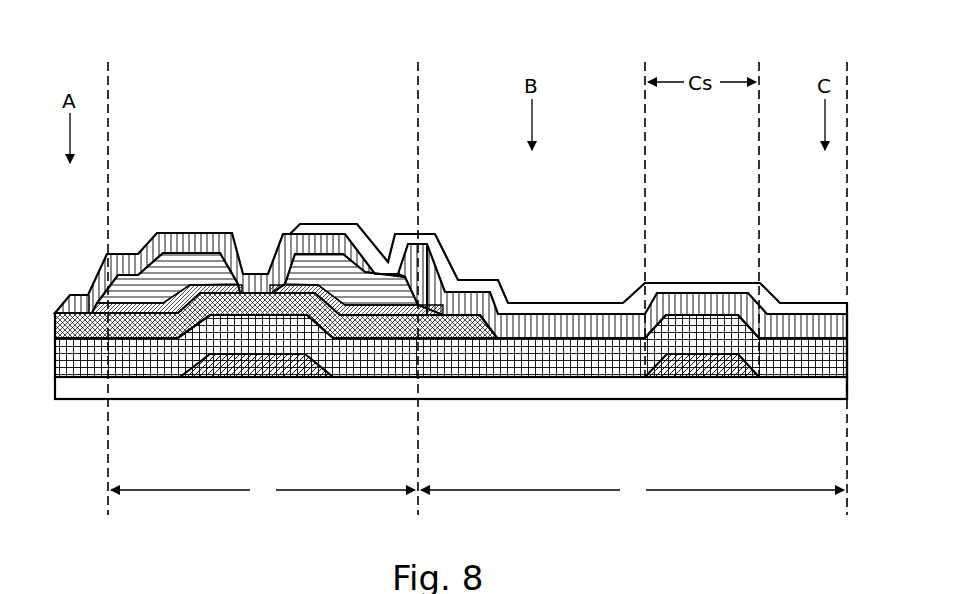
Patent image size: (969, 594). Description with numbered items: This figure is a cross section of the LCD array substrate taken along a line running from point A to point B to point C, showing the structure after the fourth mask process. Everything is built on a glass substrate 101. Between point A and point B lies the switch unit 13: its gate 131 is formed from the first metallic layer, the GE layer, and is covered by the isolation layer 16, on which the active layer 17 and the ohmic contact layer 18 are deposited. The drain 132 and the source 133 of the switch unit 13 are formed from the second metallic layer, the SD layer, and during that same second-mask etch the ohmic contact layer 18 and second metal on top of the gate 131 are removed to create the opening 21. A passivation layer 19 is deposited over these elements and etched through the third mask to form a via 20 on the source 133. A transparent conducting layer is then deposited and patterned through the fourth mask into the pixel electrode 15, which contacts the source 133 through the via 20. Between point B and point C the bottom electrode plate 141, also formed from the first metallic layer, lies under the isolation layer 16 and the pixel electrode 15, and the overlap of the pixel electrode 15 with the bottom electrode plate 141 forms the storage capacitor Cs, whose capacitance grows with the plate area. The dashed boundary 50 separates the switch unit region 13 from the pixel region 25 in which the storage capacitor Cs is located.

The glass substrate 101 is at (707, 388).
The gate 131 is at (245, 370).
The bottom electrode plate 141 is at (667, 378).
The isolation layer 16 is at (727, 347).
The active layer 17 is at (435, 327).
The drain 132 is at (183, 277).
The source 133 is at (288, 283).
The ohmic contact layer 18 is at (124, 308).
The passivation layer 19 is at (607, 327).
The pixel electrode 15 is at (533, 306).
The opening 21 is at (247, 244).
The via 20 is at (386, 238).
The boundary line 50 is at (431, 53).
The switch unit 13 is at (263, 490).
The pixel region 25 is at (632, 490).